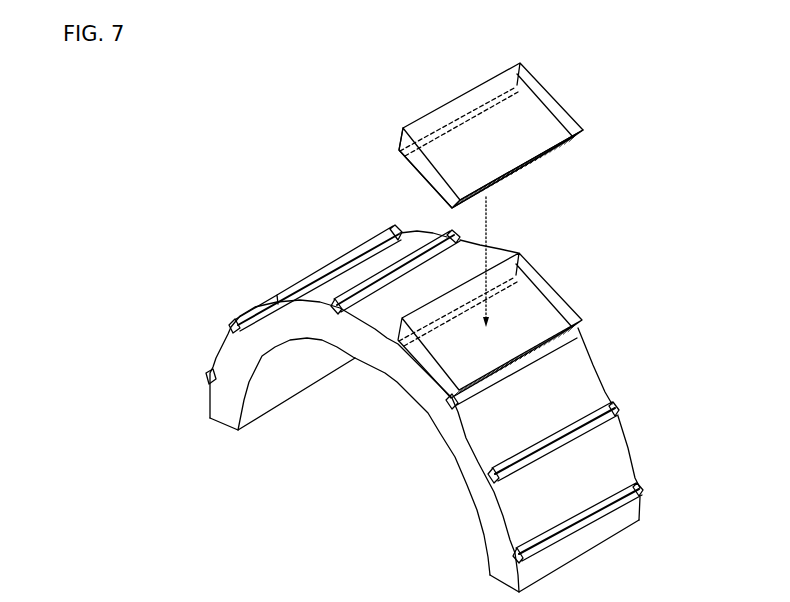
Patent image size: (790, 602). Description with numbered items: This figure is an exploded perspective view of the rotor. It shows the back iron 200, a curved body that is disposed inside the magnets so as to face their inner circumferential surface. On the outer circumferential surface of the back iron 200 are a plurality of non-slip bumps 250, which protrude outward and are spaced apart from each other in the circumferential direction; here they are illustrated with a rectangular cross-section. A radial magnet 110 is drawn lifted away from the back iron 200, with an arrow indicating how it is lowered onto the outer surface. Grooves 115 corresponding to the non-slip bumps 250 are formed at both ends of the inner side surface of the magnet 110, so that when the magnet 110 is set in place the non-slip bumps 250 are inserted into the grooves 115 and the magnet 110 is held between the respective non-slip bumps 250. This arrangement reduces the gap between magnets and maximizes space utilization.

The radial magnet 110 is at (513, 150).
The groove of radial magnet 115 is at (450, 207).
The back iron 200 is at (232, 395).
The non-slip bump 250 is at (527, 537).